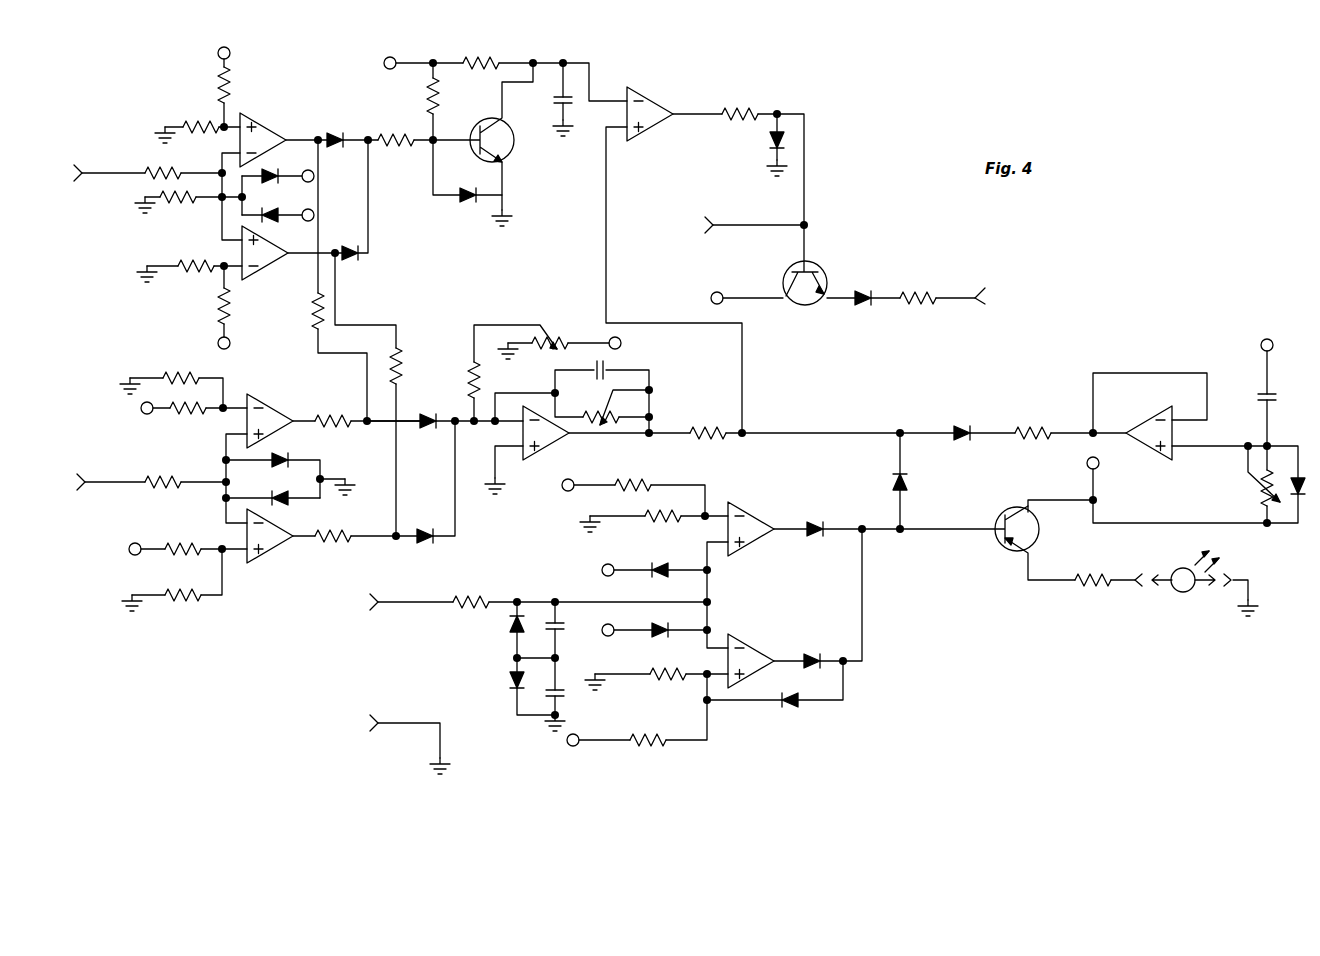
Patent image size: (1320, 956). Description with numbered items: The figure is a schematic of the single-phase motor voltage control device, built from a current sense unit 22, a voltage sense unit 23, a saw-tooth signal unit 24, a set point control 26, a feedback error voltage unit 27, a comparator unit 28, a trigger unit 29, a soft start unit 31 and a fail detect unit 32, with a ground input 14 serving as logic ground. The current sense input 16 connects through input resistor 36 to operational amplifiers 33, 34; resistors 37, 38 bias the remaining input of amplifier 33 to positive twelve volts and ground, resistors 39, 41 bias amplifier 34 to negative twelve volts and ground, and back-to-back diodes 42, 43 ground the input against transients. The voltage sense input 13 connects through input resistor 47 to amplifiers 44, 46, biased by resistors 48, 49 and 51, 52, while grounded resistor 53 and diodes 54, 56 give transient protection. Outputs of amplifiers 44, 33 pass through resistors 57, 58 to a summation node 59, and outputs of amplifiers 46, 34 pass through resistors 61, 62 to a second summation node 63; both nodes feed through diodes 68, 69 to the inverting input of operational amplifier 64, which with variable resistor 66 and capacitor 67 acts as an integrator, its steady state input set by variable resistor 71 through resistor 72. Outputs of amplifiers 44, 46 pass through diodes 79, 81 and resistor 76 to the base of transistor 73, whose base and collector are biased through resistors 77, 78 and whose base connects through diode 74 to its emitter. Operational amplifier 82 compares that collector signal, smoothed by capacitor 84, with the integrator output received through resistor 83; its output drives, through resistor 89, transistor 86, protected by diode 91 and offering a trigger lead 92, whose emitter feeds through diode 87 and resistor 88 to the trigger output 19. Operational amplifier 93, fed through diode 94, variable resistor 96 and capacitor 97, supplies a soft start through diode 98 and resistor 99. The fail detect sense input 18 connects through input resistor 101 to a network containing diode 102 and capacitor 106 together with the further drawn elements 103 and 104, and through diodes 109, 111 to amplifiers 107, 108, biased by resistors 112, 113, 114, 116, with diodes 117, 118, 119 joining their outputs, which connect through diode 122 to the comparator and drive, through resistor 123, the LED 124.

The voltage sense input 13 is at (92, 163).
The ground input 14 is at (384, 718).
The current sense input 16 is at (100, 472).
The fail detect sense input 18 is at (366, 598).
The trigger output 19 is at (986, 290).
The current sense unit 22 is at (252, 602).
The voltage sense unit 23 is at (272, 90).
The saw-tooth signal unit 24 is at (518, 56).
The set point control 26 is at (538, 328).
The feedback error voltage unit 27 is at (515, 496).
The comparator unit 28 is at (647, 92).
The trigger unit 29 is at (834, 250).
The soft start unit 31 is at (1159, 367).
The fail detect unit 32 is at (856, 676).
The operational amplifier 33 is at (276, 408).
The operational amplifier 34 is at (284, 556).
The input resistor 36 is at (169, 474).
The resistor 37 is at (182, 416).
The resistor 38 is at (180, 372).
The resistor 39 is at (181, 543).
The resistor 41 is at (178, 602).
The diode 42 is at (288, 452).
The diode 43 is at (286, 489).
The operational amplifier 44 is at (272, 130).
The operational amplifier 46 is at (280, 264).
The input resistor 47 is at (152, 168).
The resistor 48 is at (193, 122).
The resistor 49 is at (217, 82).
The resistor 51 is at (199, 263).
The resistor 52 is at (216, 301).
The resistor 53 is at (172, 202).
The diode 54 is at (274, 171).
The diode 56 is at (268, 208).
The resistor 57 is at (310, 306).
The resistor 58 is at (335, 410).
The summation node 59 is at (367, 428).
The resistor 61 is at (404, 363).
The resistor 62 is at (338, 530).
The second summation node 63 is at (395, 544).
The operational amplifier 64 is at (558, 448).
The variable resistor 66 is at (593, 406).
The capacitor 67 is at (611, 368).
The diode 68 is at (424, 428).
The diode 69 is at (423, 526).
The variable resistor 71 is at (562, 337).
The resistor 72 is at (469, 380).
The transistor 73 is at (516, 138).
The diode 74 is at (464, 208).
The resistor 76 is at (397, 133).
The resistor 77 is at (426, 96).
The resistor 78 is at (476, 57).
The diode 79 is at (335, 132).
The diode 81 is at (350, 245).
The operational amplifier 82 is at (671, 98).
The resistor 83 is at (703, 426).
The capacitor 84 is at (554, 98).
The transistor 86 is at (832, 272).
The diode 87 is at (864, 306).
The resistor 88 is at (932, 292).
The resistor 89 is at (743, 106).
The diode 91 is at (766, 142).
The trigger lead 92 is at (724, 216).
The operational amplifier 93 is at (1154, 448).
The diode 94 is at (1304, 469).
The variable resistor 96 is at (1256, 504).
The capacitor 97 is at (1260, 394).
The diode 98 is at (962, 426).
The resistor 99 is at (1032, 426).
The input resistor 101 is at (470, 592).
The diode 102 is at (502, 628).
The capacitor 103 is at (563, 623).
The diode 104 is at (500, 684).
The capacitor 106 is at (562, 678).
The operational amplifier 107 is at (755, 506).
The operational amplifier 108 is at (752, 642).
The diode 109 is at (654, 566).
The diode 111 is at (645, 625).
The resistor 112 is at (670, 506).
The resistor 113 is at (645, 480).
The resistor 114 is at (658, 682).
The resistor 116 is at (652, 734).
The diode 117 is at (818, 658).
The diode 118 is at (797, 696).
The diode 119 is at (823, 516).
The diode 122 is at (907, 484).
The resistor 123 is at (1088, 572).
The LED 124 is at (1178, 566).